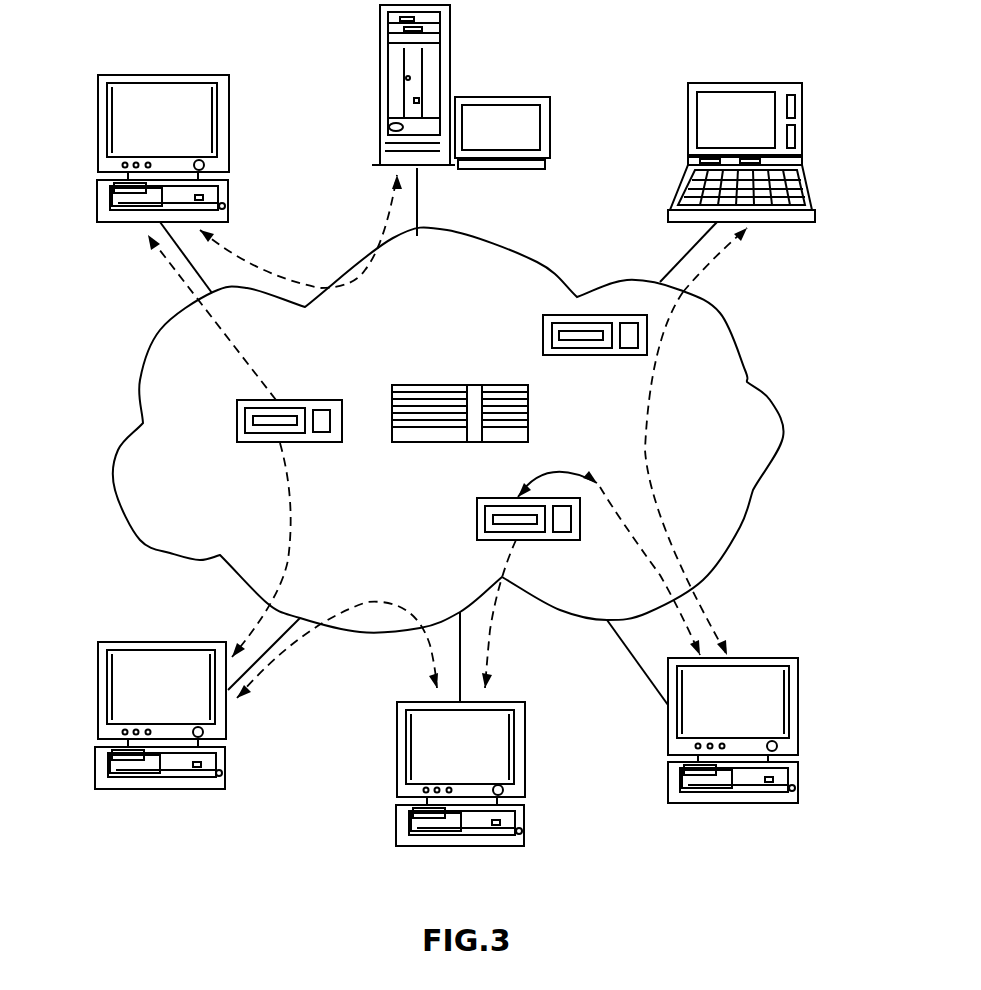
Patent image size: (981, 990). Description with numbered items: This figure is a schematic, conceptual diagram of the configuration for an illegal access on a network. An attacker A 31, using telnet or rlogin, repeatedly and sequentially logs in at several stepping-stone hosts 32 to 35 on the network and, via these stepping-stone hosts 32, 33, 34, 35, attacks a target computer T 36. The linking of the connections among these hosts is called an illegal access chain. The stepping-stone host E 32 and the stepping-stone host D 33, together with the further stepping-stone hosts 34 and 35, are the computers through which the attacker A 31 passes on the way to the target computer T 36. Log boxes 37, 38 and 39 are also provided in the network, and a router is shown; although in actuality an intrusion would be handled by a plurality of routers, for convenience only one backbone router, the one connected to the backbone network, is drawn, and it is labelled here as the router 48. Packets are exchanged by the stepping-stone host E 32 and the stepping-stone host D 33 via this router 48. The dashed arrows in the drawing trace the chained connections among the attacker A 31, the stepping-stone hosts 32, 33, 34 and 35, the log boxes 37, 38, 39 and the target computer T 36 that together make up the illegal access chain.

The attacker A 31 is at (688, 115).
The stepping-stone host E 32 is at (765, 658).
The stepping-stone host D 33 is at (528, 757).
The stepping-stone host 34 is at (100, 690).
The stepping-stone host 35 is at (230, 130).
The target computer T 36 is at (380, 62).
The log box 37 is at (477, 522).
The log box 38 is at (312, 400).
The log box 39 is at (543, 335).
The router R 48 is at (410, 384).